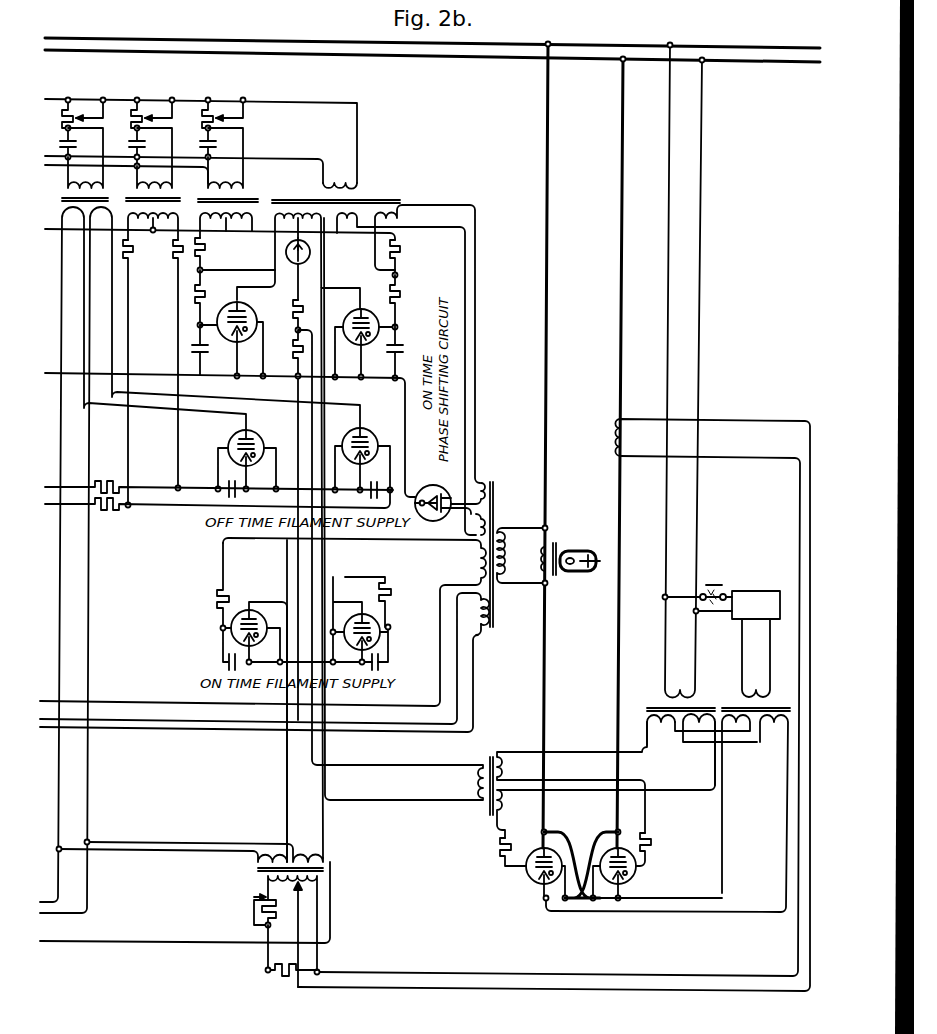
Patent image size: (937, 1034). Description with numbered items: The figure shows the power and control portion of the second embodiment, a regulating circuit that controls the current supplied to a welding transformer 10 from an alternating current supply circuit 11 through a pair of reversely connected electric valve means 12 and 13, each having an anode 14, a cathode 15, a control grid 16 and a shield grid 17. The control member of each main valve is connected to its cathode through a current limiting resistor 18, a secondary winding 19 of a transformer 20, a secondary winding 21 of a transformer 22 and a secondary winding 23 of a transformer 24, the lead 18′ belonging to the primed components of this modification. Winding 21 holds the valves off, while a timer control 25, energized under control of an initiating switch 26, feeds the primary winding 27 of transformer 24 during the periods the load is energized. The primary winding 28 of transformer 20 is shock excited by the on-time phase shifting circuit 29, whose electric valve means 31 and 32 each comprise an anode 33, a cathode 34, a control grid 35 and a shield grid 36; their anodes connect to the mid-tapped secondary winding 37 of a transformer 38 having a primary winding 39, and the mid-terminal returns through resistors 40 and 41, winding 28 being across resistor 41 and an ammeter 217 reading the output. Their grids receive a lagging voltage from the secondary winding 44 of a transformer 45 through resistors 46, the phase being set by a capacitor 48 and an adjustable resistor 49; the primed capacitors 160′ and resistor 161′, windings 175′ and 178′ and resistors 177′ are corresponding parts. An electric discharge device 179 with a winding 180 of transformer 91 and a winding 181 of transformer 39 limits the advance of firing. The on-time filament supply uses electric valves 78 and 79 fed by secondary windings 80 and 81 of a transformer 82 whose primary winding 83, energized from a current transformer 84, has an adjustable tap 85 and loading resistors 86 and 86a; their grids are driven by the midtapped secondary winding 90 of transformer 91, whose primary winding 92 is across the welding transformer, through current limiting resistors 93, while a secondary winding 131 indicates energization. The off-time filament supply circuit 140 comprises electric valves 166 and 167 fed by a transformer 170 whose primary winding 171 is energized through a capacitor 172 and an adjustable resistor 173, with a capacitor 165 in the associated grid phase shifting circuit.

The welding transformer 10 is at (570, 544).
The alternating current supply circuit 11 is at (753, 59).
The electric valve means 12 is at (530, 885).
The electric valve means 13 is at (634, 872).
The anode 14 is at (530, 842).
The cathode 15 is at (540, 896).
The control grid 16 is at (556, 857).
The shield grid 17 is at (529, 872).
The current limiting resistor 18 is at (499, 848).
The transformer winding lead 18′ is at (345, 222).
The secondary winding 19 is at (504, 766).
The transformer 20 is at (476, 750).
The secondary winding 21 is at (712, 705).
The transformer 22 is at (736, 745).
The secondary winding 23 is at (772, 728).
The transformer 24 is at (783, 691).
The timer control 25 is at (758, 590).
The initiating switch 26 is at (720, 590).
The primary winding 27 is at (752, 690).
The primary winding 28 is at (470, 786).
The phase shifting circuit 29 is at (268, 300).
The electric valve means 31 is at (207, 350).
The electric valve means 32 is at (372, 312).
The anode 33 is at (238, 306).
The cathode 34 is at (236, 336).
The control grid 35 is at (242, 348).
The shield grid 36 is at (209, 299).
The secondary winding 37 is at (304, 196).
The transformer 38 is at (406, 355).
The primary winding 39 is at (338, 183).
The resistor 40 is at (304, 311).
The resistor 41 is at (292, 350).
The secondary winding 44 is at (234, 231).
The transformer 45 is at (240, 193).
The resistor 46 is at (210, 245).
The capacitor 48 is at (214, 142).
The adjustable resistor 49 is at (210, 108).
The electric valve 78 is at (251, 608).
The electric valve 79 is at (365, 610).
The secondary winding 80 is at (256, 860).
The secondary winding 81 is at (315, 856).
The transformer 82 is at (306, 869).
The primary winding 83 is at (266, 882).
The current transformer 84 is at (612, 436).
The adjustable tap 85 is at (296, 887).
The adjustable loading resistor 86 is at (266, 972).
The adjustable loading resistor 86a is at (270, 922).
The secondary winding 90 is at (476, 554).
The transformer 91 is at (277, 657).
The primary winding 92 is at (506, 553).
The current limiting resistor 93 is at (216, 596).
The secondary winding 131 is at (486, 622).
The off-time filament supply circuit 140 is at (274, 570).
The capacitor 160′ is at (142, 142).
The adjustable resistor 161′ is at (139, 108).
The capacitor 165 is at (139, 554).
The electric valve 166 is at (258, 432).
The electric valve 167 is at (368, 432).
The transformer 170 is at (198, 550).
The primary winding 171 is at (66, 184).
The capacitor 172 is at (74, 142).
The adjustable resistor 173 is at (70, 108).
The transformer winding 175′ is at (166, 208).
The resistors 177′ is at (163, 248).
The transformer winding 178′ is at (154, 158).
The electric discharge device 179 is at (431, 485).
The winding 180 is at (480, 480).
The winding 181 is at (400, 208).
The ammeter 217 is at (310, 252).